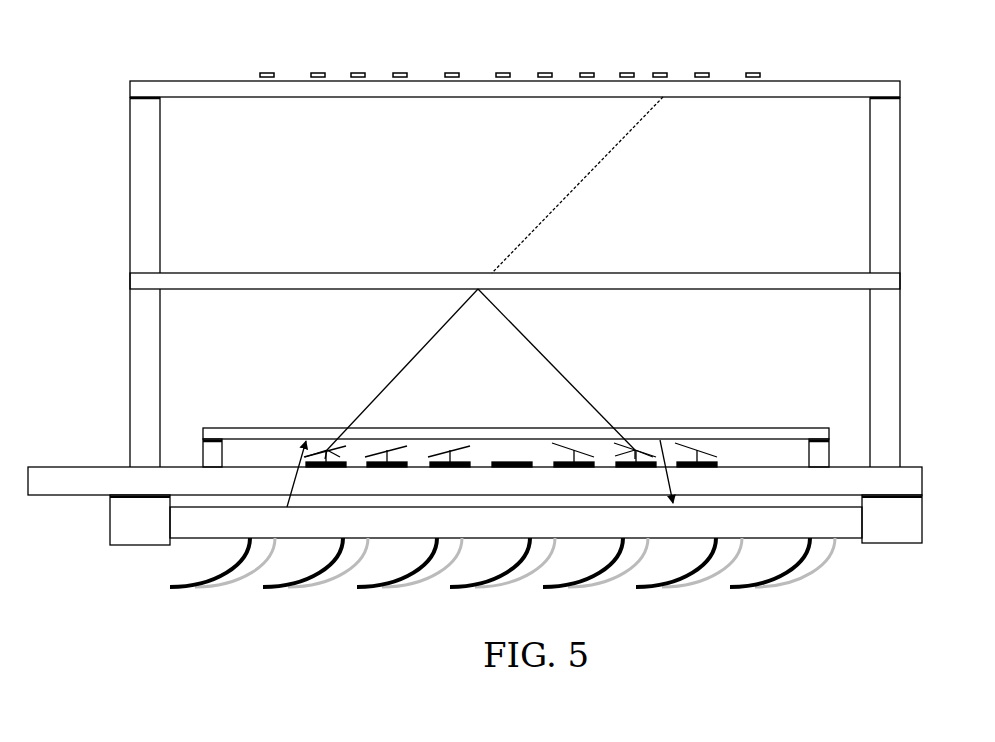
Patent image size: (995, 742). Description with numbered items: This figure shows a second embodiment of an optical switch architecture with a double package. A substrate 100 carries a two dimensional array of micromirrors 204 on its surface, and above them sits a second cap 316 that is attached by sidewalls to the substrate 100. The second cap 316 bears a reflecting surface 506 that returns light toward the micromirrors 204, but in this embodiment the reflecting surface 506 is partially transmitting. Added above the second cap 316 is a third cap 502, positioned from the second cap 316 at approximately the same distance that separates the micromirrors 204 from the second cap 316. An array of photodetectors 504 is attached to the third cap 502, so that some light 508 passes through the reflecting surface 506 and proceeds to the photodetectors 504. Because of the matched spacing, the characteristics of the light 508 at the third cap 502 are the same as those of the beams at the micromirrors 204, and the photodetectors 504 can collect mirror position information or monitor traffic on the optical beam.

The substrate 100 is at (82, 465).
The micromirrors 204 is at (698, 444).
The second cap 316 is at (129, 278).
The third cap 502 is at (129, 88).
The photodetectors 504 is at (250, 70).
The reflecting surface 506 is at (477, 287).
The light 508 is at (592, 173).